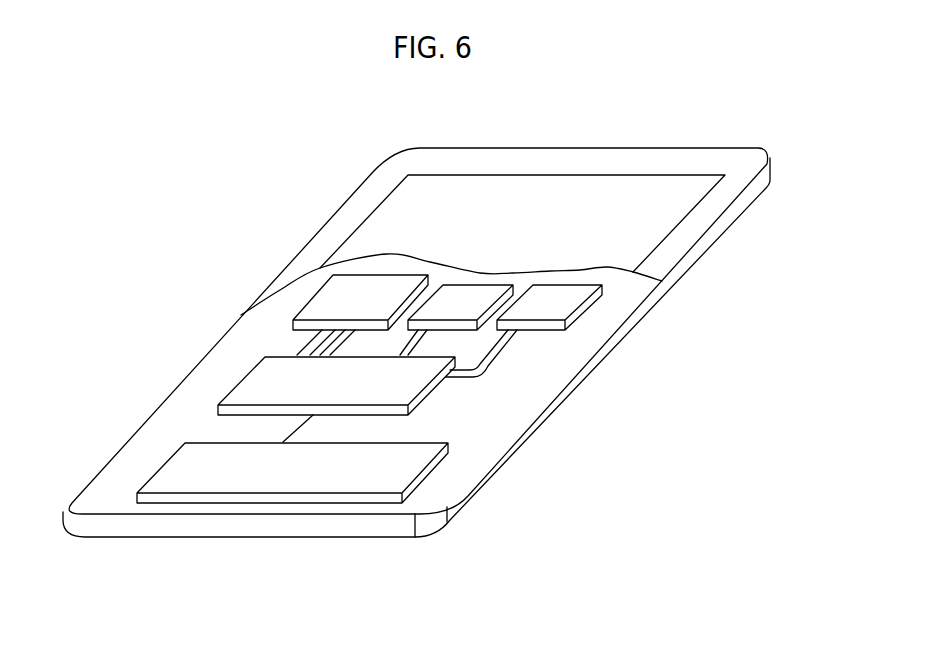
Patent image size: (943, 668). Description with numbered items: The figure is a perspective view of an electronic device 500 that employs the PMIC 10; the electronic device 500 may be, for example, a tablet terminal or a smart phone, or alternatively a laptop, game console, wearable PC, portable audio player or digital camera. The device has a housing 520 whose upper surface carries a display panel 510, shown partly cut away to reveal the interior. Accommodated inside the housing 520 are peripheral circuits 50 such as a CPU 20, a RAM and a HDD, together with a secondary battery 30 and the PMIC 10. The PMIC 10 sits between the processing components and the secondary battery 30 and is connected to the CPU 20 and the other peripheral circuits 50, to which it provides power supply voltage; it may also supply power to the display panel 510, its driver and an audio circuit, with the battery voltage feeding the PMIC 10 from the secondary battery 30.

The electronic device 500 is at (452, 603).
The display panel 510 is at (402, 212).
The housing 520 is at (744, 160).
The CPU 20 is at (320, 305).
The peripheral circuits 50 is at (496, 288).
The PMIC 10 is at (257, 378).
The secondary battery 30 is at (397, 468).